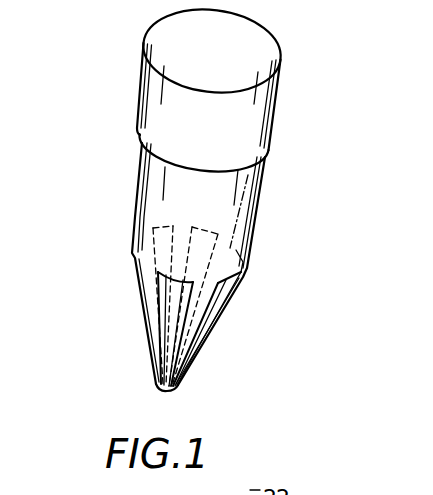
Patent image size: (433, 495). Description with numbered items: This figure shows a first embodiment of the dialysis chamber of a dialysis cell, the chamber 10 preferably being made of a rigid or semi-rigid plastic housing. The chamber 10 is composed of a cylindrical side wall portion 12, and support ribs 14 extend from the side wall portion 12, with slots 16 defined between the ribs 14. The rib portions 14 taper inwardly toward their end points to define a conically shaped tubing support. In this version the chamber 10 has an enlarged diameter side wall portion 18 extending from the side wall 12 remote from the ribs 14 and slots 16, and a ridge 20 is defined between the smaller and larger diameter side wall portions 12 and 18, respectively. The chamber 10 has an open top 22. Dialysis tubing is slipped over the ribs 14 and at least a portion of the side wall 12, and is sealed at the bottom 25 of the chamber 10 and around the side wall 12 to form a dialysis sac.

The chamber 10 is at (126, 186).
The cylindrical side wall portion 12 is at (257, 195).
The support ribs 14 is at (150, 281).
The slots 16 is at (170, 334).
The enlarged diameter side wall portion 18 is at (276, 99).
The ridge 20 is at (270, 157).
The open top 22 is at (256, 54).
The bottom 25 is at (171, 394).